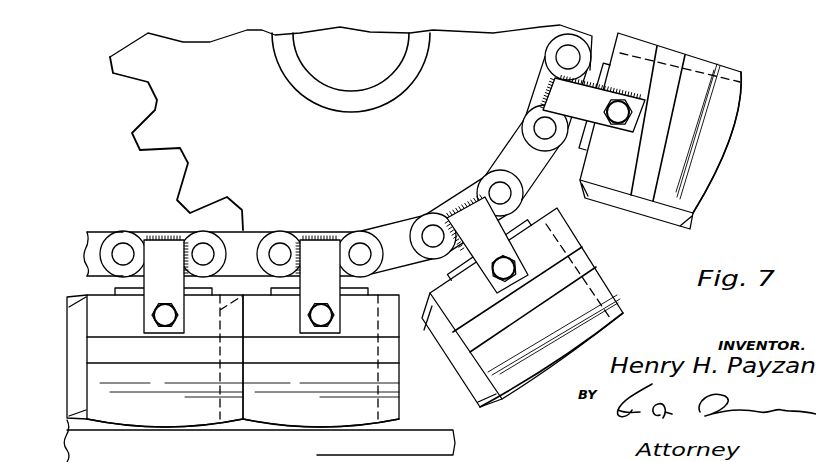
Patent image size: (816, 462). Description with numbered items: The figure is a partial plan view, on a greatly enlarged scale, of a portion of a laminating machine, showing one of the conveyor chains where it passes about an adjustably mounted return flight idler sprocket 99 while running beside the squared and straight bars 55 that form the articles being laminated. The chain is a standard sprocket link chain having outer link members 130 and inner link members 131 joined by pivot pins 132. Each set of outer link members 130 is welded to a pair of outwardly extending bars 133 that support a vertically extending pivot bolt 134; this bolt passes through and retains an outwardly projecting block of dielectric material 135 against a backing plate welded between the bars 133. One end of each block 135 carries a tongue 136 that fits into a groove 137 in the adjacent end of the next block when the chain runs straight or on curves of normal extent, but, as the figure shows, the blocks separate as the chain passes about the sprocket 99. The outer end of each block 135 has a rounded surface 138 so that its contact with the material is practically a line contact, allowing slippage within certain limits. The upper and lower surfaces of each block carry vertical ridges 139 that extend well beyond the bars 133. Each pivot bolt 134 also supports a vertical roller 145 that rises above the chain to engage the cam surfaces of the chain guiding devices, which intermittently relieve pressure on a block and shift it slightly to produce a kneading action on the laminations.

The bars 55 is at (443, 440).
The return flight idler sprocket 99 is at (157, 95).
The outer link members 130 is at (124, 232).
The inner link members 131 is at (251, 232).
The pivot pins 132 is at (206, 244).
The outwardly extending bars 133 is at (164, 242).
The pivot bolt 134 is at (154, 315).
The block of dielectric material 135 is at (180, 384).
The tongue 136 is at (457, 360).
The groove 137 is at (383, 385).
The rounded surface 138 is at (257, 427).
The vertical ridges 139 is at (316, 357).
The vertical roller 145 is at (178, 318).